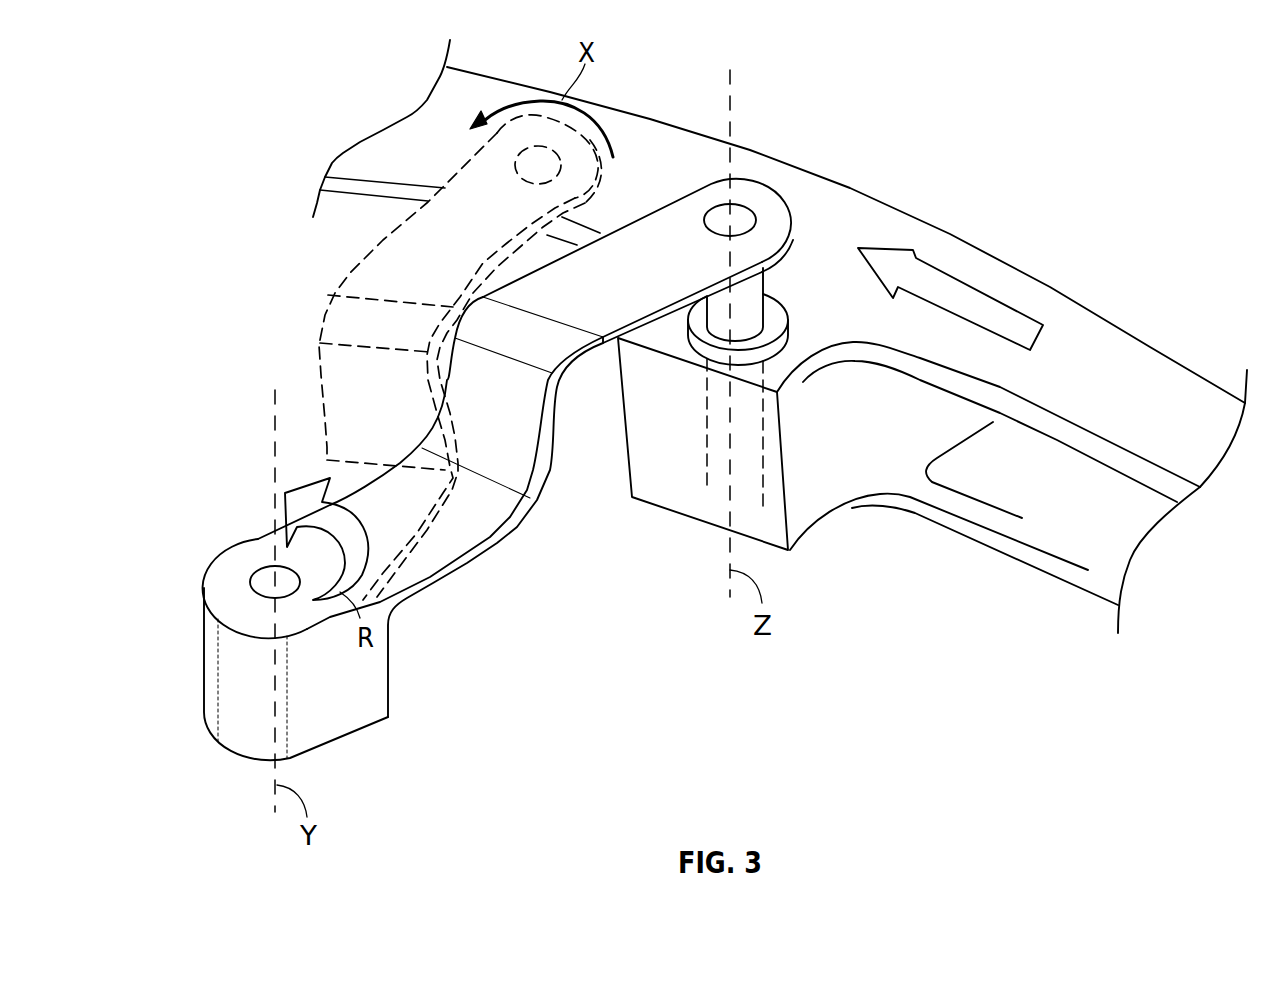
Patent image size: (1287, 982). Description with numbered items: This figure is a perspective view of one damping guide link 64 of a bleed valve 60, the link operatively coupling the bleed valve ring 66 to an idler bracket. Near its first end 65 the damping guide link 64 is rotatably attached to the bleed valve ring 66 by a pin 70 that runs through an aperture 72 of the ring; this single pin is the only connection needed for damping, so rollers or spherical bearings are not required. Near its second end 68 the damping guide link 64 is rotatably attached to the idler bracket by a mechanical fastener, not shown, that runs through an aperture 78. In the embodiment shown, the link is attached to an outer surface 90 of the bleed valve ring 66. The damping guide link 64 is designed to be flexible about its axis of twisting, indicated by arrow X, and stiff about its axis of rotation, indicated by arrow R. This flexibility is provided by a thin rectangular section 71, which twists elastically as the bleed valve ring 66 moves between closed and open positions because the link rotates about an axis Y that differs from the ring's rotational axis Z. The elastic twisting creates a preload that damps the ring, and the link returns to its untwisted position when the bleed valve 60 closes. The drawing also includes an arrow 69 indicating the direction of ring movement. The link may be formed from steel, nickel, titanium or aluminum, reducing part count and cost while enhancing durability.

The bleed valve 60 is at (539, 73).
The damping guide link 64 is at (455, 535).
The first end 65 is at (760, 188).
The bleed valve ring 66 is at (1012, 268).
The second end 68 is at (232, 680).
The direction of movement arrow 69 is at (1043, 333).
The pin 70 is at (762, 272).
The thin rectangular section 71 is at (513, 448).
The aperture 72 is at (763, 436).
The aperture 78 is at (257, 570).
The outer surface 90 is at (1133, 350).